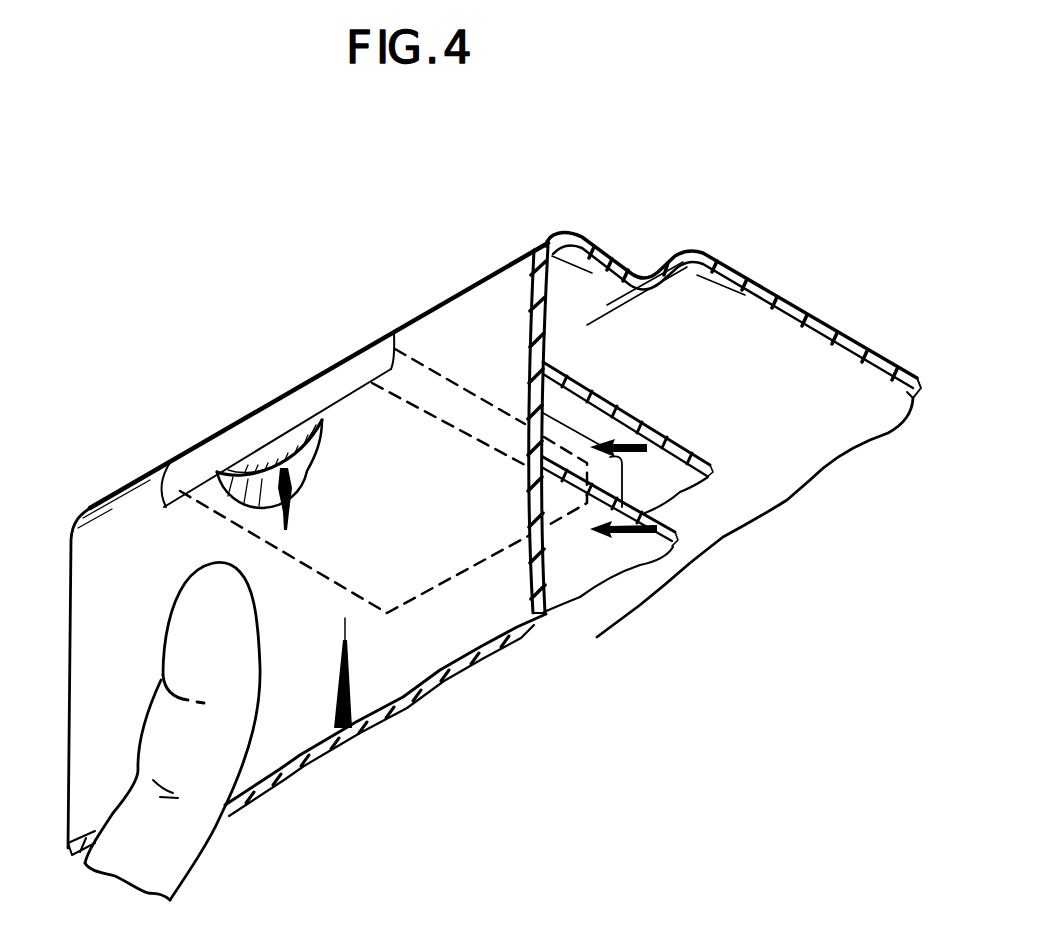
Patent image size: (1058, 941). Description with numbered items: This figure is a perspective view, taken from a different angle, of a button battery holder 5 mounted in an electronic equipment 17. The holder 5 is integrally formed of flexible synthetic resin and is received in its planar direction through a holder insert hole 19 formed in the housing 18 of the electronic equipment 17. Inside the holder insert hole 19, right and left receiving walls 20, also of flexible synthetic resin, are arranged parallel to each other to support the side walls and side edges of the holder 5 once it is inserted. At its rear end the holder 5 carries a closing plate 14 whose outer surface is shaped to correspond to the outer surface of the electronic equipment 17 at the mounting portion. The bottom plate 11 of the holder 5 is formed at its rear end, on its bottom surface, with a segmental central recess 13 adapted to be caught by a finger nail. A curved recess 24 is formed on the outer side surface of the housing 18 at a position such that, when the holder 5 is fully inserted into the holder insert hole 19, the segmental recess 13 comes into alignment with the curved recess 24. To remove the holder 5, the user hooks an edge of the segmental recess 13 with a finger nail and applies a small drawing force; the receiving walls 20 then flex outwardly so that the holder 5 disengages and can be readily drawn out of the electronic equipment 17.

The button battery holder 5 is at (260, 417).
The bottom plate 11 is at (242, 456).
The segmental central recess 13 is at (310, 462).
The closing plate 14 is at (307, 387).
The electronic equipment 17 is at (473, 278).
The housing 18 is at (437, 320).
The holder insert hole 19 is at (364, 368).
The receiving wall 20 is at (620, 472).
The curved recess 24 is at (293, 497).